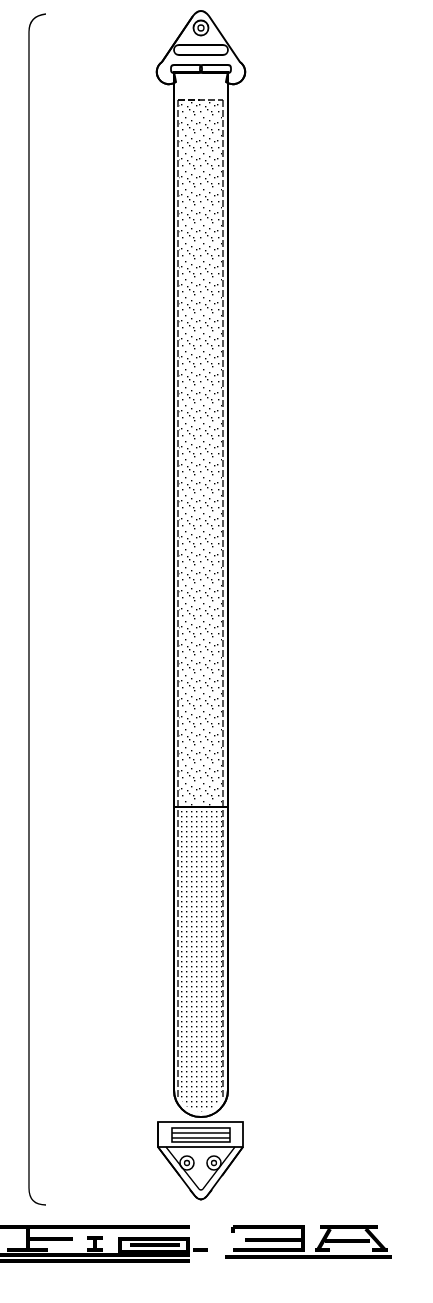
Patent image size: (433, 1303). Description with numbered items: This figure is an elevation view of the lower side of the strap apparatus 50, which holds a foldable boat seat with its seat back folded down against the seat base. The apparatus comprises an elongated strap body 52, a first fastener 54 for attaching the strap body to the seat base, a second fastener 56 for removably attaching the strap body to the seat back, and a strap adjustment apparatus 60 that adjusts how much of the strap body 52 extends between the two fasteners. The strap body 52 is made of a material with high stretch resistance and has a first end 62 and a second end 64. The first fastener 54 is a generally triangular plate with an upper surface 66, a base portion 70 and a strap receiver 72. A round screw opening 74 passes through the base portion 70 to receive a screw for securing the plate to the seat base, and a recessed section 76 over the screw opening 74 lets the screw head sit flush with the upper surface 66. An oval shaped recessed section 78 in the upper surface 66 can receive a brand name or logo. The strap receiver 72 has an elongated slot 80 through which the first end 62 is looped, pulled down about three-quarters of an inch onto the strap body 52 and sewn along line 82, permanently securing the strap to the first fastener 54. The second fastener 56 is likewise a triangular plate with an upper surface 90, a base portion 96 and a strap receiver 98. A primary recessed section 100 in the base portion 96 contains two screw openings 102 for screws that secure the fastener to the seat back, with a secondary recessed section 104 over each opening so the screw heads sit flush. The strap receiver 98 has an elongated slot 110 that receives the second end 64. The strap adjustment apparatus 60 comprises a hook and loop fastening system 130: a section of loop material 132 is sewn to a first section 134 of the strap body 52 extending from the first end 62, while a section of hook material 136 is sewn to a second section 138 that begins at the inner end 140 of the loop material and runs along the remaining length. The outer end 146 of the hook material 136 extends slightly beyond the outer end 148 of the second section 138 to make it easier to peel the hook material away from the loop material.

The strap apparatus 50 is at (345, 98).
The strap body 52 is at (208, 222).
The first fastener 54 is at (220, 40).
The second fastener 56 is at (238, 1141).
The strap adjustment apparatus 60 is at (195, 375).
The first end 62 is at (215, 101).
The second end 64 is at (222, 1086).
The upper surface 66 is at (236, 80).
The base portion 70 is at (182, 40).
The strap receiver 72 is at (165, 80).
The screw opening 74 is at (192, 23).
The recessed section 76 is at (208, 22).
The oval shaped recessed section 78 is at (229, 66).
The elongated slot 80 is at (175, 66).
The sewing line 82 is at (188, 101).
The upper surface 90 is at (236, 1153).
The base portion 96 is at (168, 1158).
The strap receiver 98 is at (165, 1133).
The primary recessed section 100 is at (196, 1191).
The screw openings 102 is at (181, 1170).
The secondary recessed section 104 is at (183, 1163).
The elongated slot 110 is at (213, 1135).
The hook and loop fastening system 130 is at (210, 468).
The section of loop material 132 is at (200, 575).
The first section 134 is at (227, 627).
The section of hook material 136 is at (205, 920).
The second section 138 is at (227, 993).
The inner end 140 is at (215, 800).
The outer end 146 is at (188, 1102).
The outer end 148 is at (188, 1082).